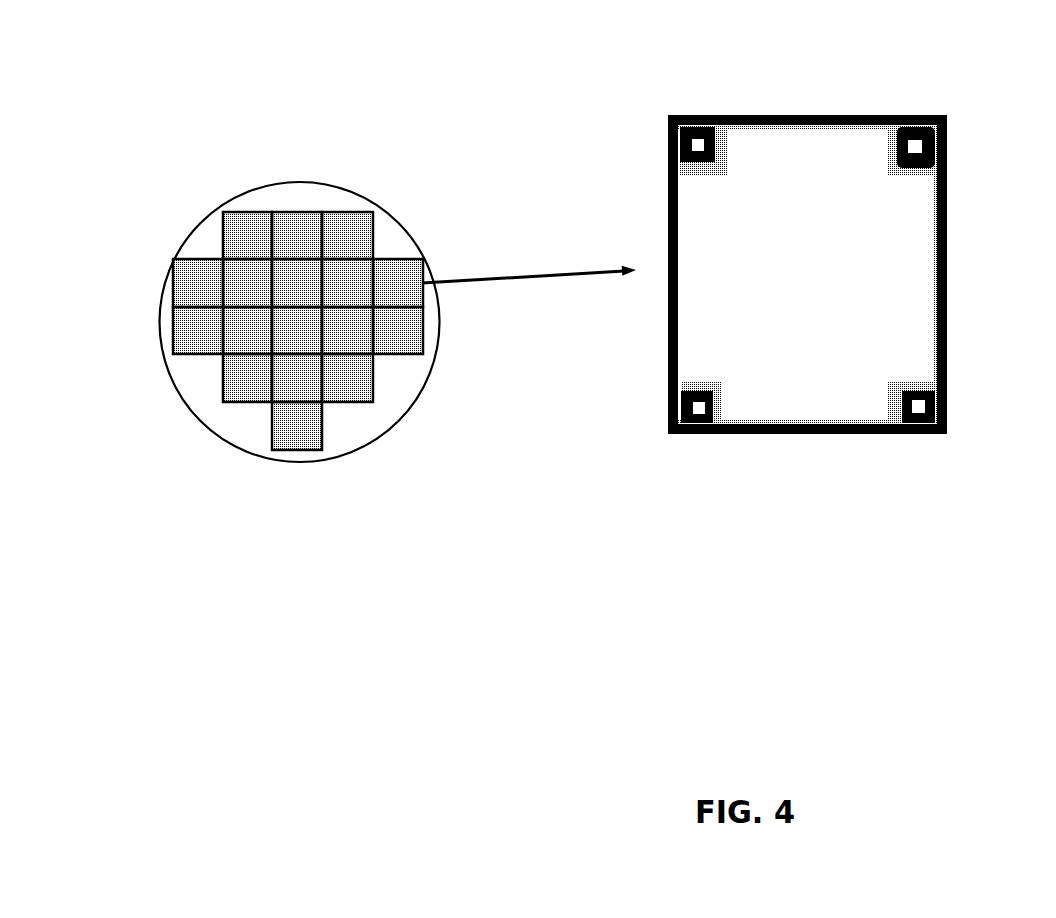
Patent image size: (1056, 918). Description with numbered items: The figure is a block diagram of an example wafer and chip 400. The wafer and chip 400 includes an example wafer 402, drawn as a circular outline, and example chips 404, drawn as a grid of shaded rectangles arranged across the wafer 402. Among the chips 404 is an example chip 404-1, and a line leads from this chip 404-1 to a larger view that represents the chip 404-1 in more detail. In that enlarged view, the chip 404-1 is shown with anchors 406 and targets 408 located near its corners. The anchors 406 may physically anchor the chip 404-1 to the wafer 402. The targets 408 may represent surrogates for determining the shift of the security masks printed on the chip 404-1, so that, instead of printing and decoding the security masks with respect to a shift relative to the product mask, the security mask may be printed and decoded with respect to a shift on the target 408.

The wafer and chip 400 is at (161, 162).
The wafer 402 is at (298, 181).
The chips 404 is at (242, 400).
The chip 404-1 is at (402, 273).
The anchors 406 is at (893, 145).
The targets 408 is at (947, 123).